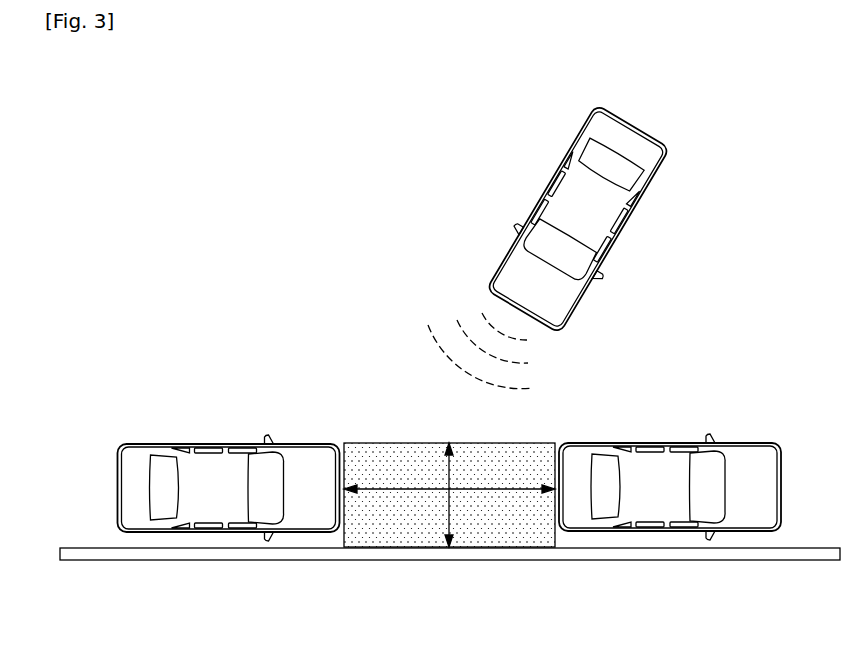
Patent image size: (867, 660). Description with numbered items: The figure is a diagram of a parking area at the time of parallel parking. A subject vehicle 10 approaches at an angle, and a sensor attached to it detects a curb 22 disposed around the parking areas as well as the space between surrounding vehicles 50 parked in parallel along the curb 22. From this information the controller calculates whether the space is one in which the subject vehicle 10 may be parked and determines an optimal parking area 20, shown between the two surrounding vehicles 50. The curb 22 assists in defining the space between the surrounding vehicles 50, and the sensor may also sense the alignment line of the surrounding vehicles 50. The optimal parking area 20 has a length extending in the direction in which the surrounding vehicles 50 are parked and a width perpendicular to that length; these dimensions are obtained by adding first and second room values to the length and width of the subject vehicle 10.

The subject vehicle 10 is at (592, 203).
The optimal parking area 20 is at (382, 541).
The curb 22 is at (268, 556).
The surrounding vehicles 50 is at (652, 470).